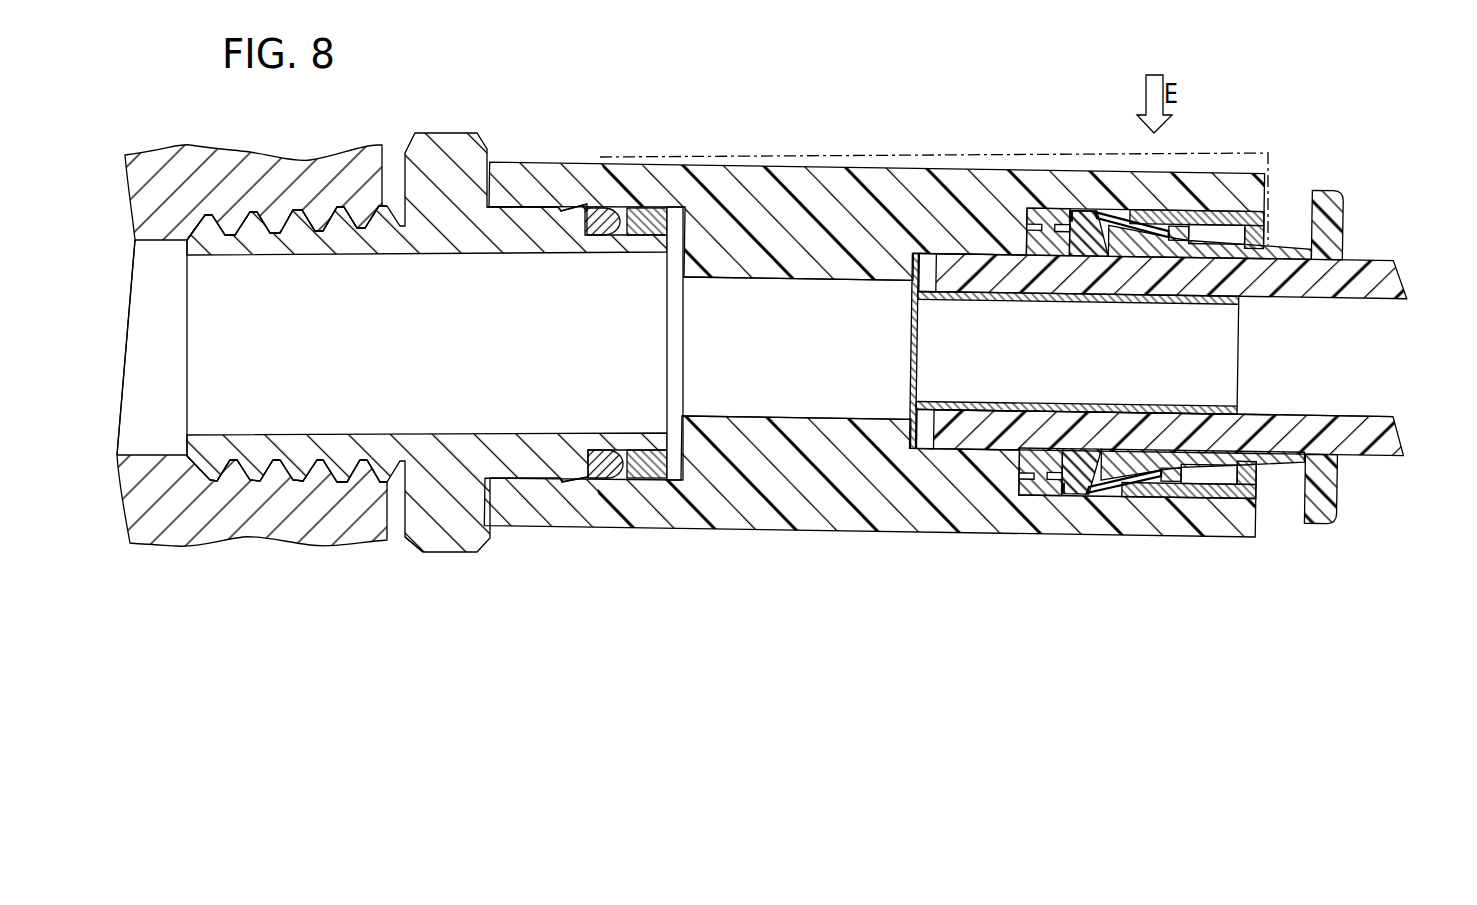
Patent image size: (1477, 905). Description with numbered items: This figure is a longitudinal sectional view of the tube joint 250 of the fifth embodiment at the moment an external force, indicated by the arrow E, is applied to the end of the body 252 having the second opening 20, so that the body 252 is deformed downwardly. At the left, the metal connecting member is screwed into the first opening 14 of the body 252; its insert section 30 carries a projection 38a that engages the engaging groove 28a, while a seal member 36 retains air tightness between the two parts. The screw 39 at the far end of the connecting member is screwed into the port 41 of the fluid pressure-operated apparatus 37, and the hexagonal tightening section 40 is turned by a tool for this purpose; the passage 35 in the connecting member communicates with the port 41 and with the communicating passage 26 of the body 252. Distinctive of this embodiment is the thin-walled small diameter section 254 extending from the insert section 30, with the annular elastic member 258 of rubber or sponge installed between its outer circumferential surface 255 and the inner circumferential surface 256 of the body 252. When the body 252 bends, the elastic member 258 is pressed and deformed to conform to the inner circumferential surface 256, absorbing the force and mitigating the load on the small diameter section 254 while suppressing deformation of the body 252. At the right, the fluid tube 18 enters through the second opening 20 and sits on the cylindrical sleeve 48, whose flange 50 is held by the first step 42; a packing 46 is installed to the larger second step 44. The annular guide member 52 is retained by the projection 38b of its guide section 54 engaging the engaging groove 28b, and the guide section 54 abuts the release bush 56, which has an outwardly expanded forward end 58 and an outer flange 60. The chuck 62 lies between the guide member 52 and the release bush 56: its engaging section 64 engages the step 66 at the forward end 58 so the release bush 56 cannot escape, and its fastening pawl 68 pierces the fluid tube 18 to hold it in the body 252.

The first opening 14 is at (523, 203).
The fluid tube 18 is at (1400, 263).
The second opening 20 is at (1247, 196).
The communicating passage 26 is at (715, 350).
The engaging groove 28a is at (566, 203).
The engaging groove 28b is at (1205, 208).
The insert section 30 is at (517, 440).
The passage 35 is at (333, 258).
The seal member 36 is at (604, 449).
The fluid pressure-operated apparatus 37 is at (217, 547).
The projection 38a is at (562, 487).
The projection 38b is at (1176, 500).
The screw 39 is at (284, 498).
The tightening section 40 is at (455, 147).
The port 41 is at (153, 442).
The first step 42 is at (955, 250).
The second step 44 is at (1100, 212).
The packing 46 is at (1040, 208).
The sleeve 48 is at (1004, 300).
The flange 50 is at (913, 290).
The guide member 52 is at (1243, 503).
The guide section 54 is at (1262, 480).
The release bush 56 is at (1344, 494).
The forward end 58 is at (1141, 413).
The flange 60 is at (1345, 216).
The chuck 62 is at (1080, 505).
The engaging section 64 is at (1185, 245).
The step 66 is at (1137, 240).
The fastening pawl 68 is at (1080, 255).
The tube joint 250 is at (1382, 97).
The body 252 is at (778, 161).
The small diameter section 254 is at (650, 449).
The outer circumferential surface 255 is at (633, 237).
The inner circumferential surface 256 is at (668, 490).
The elastic member 258 is at (645, 208).